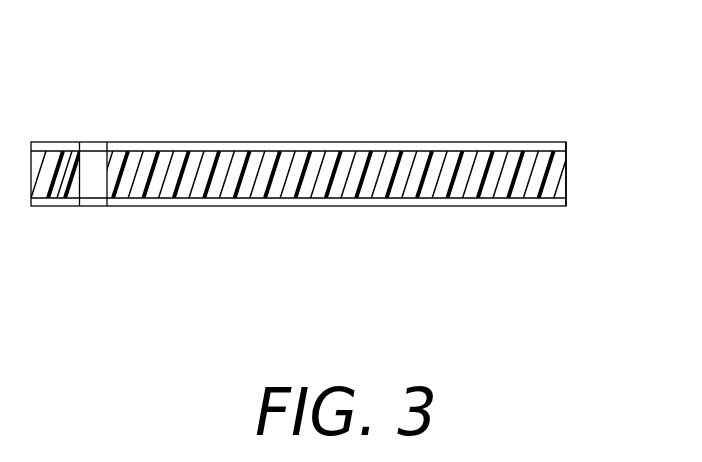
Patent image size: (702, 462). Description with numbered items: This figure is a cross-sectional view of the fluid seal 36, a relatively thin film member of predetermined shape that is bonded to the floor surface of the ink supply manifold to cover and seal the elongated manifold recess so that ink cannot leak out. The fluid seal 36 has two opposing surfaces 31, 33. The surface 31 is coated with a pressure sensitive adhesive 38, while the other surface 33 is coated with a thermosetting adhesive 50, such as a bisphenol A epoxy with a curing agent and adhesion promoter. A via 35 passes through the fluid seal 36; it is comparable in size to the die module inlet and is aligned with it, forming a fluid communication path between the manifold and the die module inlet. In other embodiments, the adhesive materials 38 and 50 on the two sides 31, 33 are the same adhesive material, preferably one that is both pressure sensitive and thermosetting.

The surface 31 is at (427, 192).
The surface 33 is at (433, 187).
The via 35 is at (93, 167).
The fluid seal 36 is at (566, 171).
The pressure sensitive adhesive 38 is at (263, 142).
The thermosetting adhesive 50 is at (52, 207).